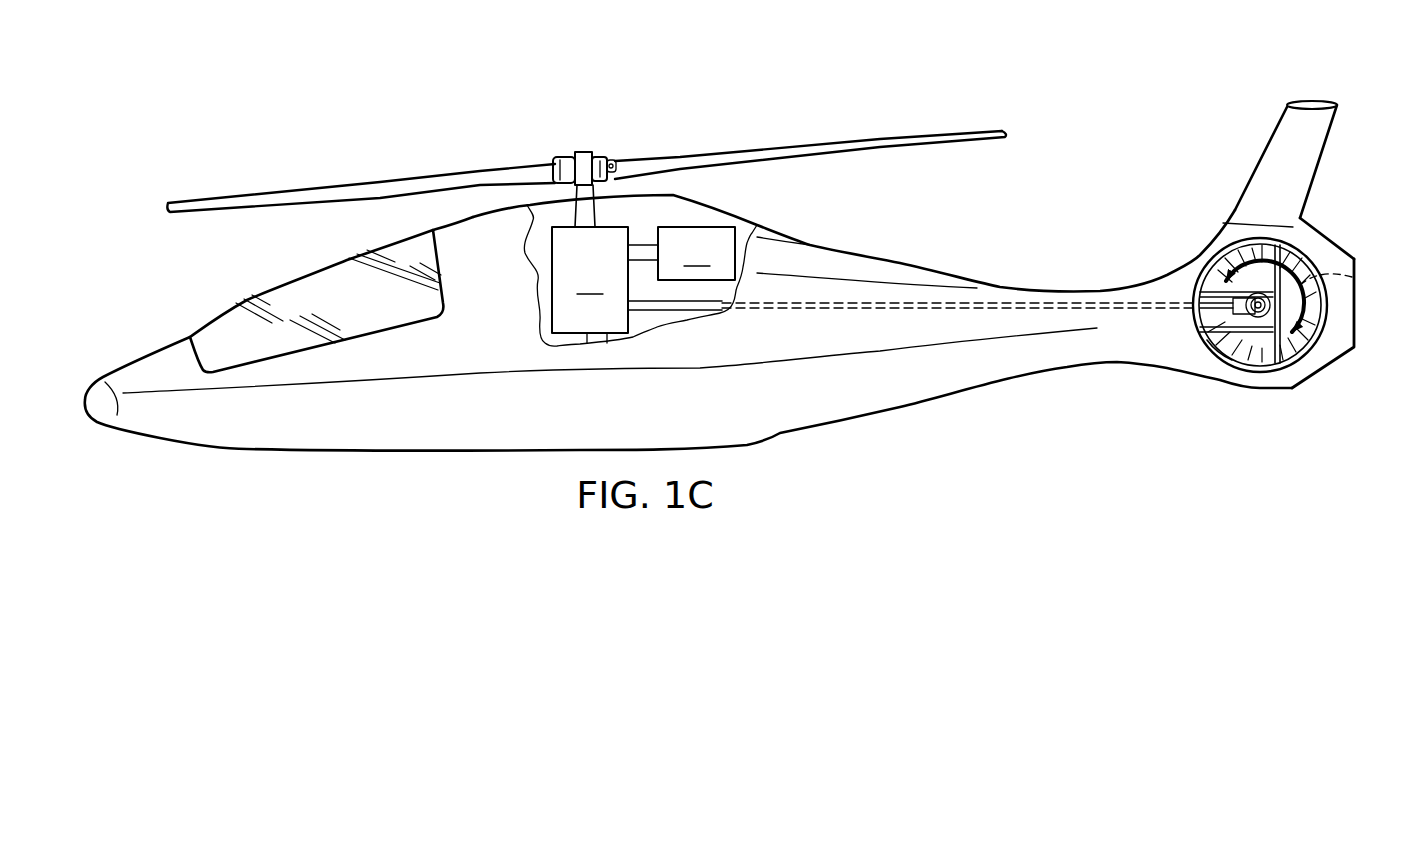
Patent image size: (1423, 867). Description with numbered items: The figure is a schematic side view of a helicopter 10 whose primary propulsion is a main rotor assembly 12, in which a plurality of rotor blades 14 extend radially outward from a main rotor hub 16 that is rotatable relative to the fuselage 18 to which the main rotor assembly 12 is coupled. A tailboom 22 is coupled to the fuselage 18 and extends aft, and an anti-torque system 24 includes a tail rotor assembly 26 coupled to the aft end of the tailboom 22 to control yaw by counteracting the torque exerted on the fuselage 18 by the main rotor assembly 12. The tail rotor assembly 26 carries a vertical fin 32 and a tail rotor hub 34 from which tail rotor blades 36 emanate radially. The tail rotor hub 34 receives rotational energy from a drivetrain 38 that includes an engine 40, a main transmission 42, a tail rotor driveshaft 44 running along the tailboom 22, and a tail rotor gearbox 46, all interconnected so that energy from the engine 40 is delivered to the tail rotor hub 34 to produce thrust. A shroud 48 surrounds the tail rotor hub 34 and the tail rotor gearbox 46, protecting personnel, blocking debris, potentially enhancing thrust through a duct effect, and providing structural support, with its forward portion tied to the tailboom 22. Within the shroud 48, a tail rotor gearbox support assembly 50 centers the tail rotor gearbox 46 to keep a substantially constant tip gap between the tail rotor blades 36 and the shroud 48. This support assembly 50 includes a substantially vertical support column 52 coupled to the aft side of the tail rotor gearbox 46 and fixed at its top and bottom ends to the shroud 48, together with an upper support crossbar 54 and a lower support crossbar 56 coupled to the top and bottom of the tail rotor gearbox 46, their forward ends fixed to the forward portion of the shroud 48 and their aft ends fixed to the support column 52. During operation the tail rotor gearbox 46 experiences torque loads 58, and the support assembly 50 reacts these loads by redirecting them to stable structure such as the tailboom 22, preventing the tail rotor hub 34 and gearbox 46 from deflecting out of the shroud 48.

The helicopter 10 is at (448, 86).
The main rotor assembly 12 is at (601, 150).
The rotor blades 14 is at (180, 204).
The main rotor hub 16 is at (560, 155).
The fuselage 18 is at (494, 452).
The tailboom 22 is at (942, 272).
The anti-torque system 24 is at (1316, 207).
The tail rotor assembly 26 is at (1352, 330).
The vertical fin 32 is at (1283, 112).
The tail rotor hub 34 is at (1237, 246).
The tail rotor blades 36 is at (1352, 277).
The drivetrain 38 is at (681, 226).
The engine 40 is at (696, 253).
The main transmission 42 is at (590, 285).
The tail rotor driveshaft 44 is at (1030, 303).
The tail rotor gearbox 46 is at (1243, 352).
The shroud 48 is at (1303, 352).
The tail rotor gearbox support assembly 50 is at (1260, 352).
The support column 52 is at (1281, 352).
The upper support crossbar 54 is at (1222, 276).
The lower support crossbar 56 is at (1218, 358).
The torque loads 58 is at (1312, 252).